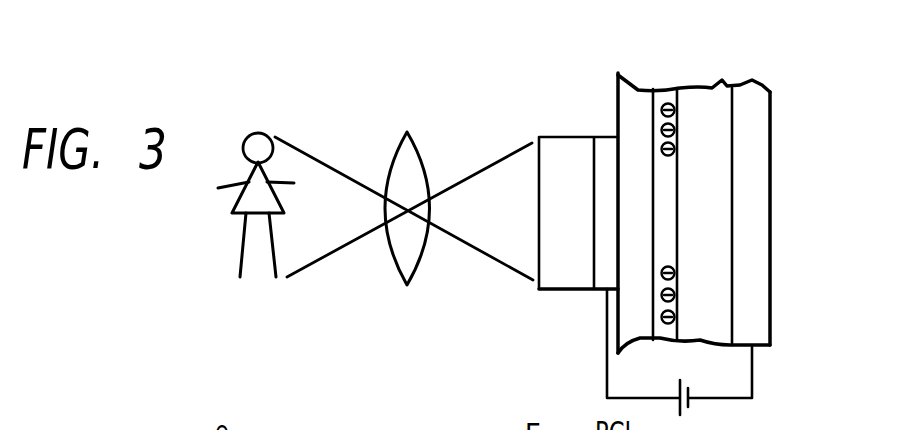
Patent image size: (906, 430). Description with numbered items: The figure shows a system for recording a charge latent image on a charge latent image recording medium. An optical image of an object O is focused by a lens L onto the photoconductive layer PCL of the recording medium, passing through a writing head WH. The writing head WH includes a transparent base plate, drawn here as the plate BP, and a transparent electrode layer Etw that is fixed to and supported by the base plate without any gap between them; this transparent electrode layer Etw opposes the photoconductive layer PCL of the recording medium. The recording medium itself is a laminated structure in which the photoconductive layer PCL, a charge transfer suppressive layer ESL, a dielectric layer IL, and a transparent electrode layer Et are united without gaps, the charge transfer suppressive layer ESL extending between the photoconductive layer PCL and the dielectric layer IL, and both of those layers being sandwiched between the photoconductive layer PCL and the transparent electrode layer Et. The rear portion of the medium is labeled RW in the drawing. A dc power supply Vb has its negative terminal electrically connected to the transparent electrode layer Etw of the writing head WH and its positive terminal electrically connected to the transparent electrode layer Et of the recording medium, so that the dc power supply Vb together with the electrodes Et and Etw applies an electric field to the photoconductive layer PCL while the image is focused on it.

The object O is at (251, 128).
The lens L is at (397, 153).
The bias plate / faceplate BP is at (565, 152).
The transparent electrode layer Etw is at (607, 152).
The photoconductive layer PCL is at (638, 103).
The charge transfer suppressive layer ESL is at (660, 97).
The dielectric layer IL is at (718, 88).
The transparent electrode layer Et is at (757, 145).
The writing head WH is at (576, 298).
The rear wall RW is at (657, 347).
The dc power supply Vb is at (716, 429).